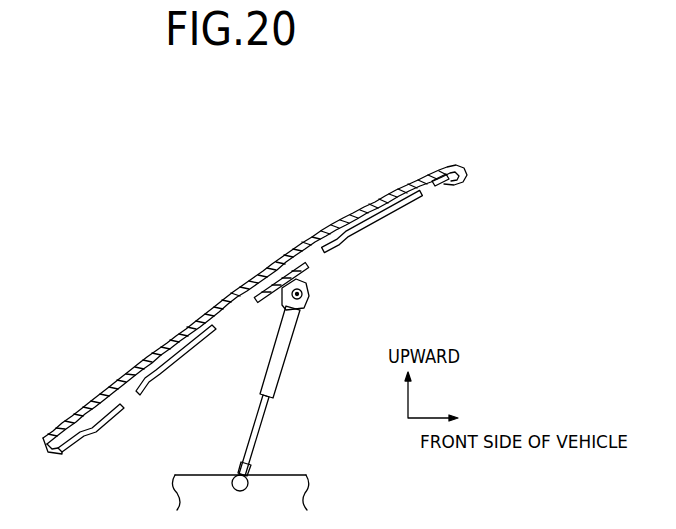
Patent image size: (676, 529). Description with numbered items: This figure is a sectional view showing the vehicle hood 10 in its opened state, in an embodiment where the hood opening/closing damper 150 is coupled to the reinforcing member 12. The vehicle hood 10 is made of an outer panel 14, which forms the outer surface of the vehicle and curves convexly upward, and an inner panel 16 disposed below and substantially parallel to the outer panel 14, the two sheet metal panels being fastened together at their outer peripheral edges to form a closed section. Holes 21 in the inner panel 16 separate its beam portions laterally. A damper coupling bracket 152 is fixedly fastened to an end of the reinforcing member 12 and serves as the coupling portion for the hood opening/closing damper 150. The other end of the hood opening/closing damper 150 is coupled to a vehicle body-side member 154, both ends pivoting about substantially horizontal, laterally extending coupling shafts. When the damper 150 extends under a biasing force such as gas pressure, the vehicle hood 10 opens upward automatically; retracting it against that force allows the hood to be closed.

The vehicle hood 10 is at (127, 279).
The reinforcing member 12 is at (280, 288).
The outer panel 14 is at (331, 187).
The inner panel 16 is at (162, 412).
The holes 21 is at (210, 322).
The hood opening/closing damper 150 is at (281, 357).
The damper coupling bracket 152 is at (307, 292).
The vehicle body-side member 154 is at (278, 484).